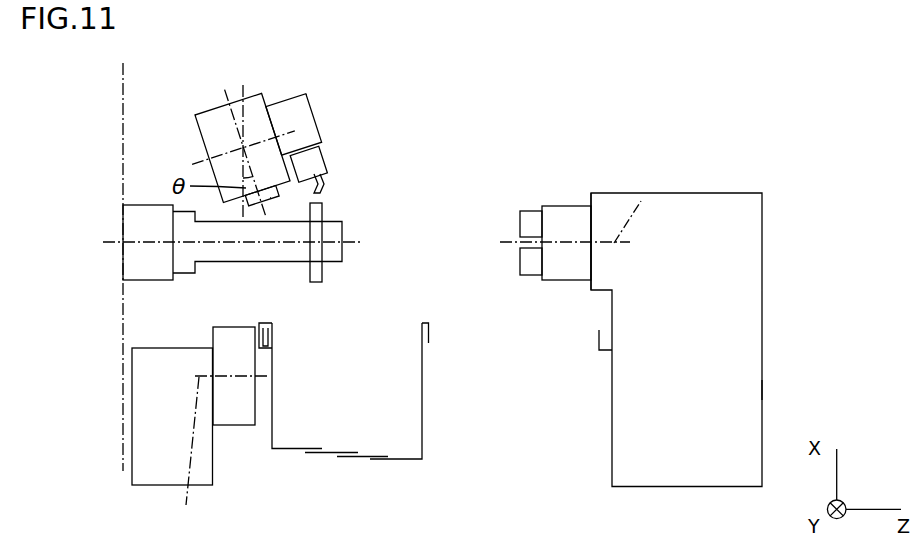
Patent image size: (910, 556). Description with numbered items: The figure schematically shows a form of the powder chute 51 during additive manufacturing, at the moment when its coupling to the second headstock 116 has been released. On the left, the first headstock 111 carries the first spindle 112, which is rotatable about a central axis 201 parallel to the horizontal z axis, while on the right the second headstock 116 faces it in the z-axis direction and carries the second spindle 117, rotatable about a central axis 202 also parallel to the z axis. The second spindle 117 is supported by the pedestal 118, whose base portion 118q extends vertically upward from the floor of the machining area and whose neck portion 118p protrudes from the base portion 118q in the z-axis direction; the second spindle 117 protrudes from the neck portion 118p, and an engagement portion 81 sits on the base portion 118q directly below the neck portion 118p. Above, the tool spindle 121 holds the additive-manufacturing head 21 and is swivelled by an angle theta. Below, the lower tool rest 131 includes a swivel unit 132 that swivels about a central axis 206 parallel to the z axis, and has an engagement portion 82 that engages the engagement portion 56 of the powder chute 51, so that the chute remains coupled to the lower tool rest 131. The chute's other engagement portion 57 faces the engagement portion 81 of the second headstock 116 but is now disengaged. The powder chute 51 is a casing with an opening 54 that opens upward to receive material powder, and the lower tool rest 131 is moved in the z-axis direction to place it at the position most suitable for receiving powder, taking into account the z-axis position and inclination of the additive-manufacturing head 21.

The additive-manufacturing head 21 is at (300, 91).
The powder chute 51 is at (424, 428).
The opening 54 is at (273, 332).
The engagement portion 56 is at (258, 323).
The engagement portion 57 is at (433, 332).
The engagement portion 81 is at (599, 340).
The engagement portion 82 is at (262, 350).
The first headstock 111 is at (150, 281).
The first spindle 112 is at (133, 265).
The second headstock 116 is at (728, 193).
The second spindle 117 is at (565, 217).
The pedestal 118 is at (762, 267).
The neck portion 118p is at (605, 217).
The base portion 118q is at (730, 390).
The tool spindle 121 is at (200, 112).
The lower tool rest 131 is at (130, 473).
The swivel unit 132 is at (233, 413).
The central axis 201 is at (147, 242).
The central axis 202 is at (651, 192).
The central axis 206 is at (186, 455).